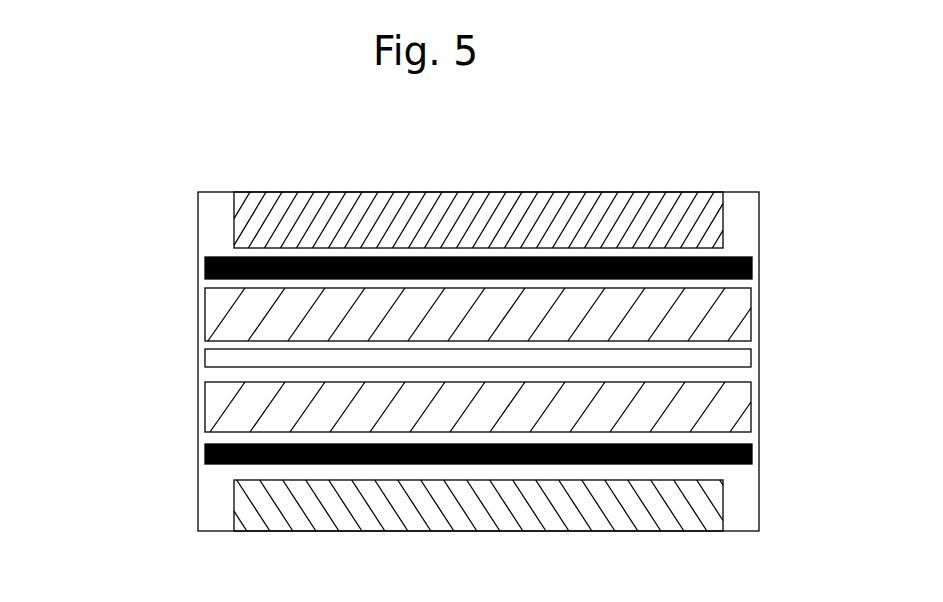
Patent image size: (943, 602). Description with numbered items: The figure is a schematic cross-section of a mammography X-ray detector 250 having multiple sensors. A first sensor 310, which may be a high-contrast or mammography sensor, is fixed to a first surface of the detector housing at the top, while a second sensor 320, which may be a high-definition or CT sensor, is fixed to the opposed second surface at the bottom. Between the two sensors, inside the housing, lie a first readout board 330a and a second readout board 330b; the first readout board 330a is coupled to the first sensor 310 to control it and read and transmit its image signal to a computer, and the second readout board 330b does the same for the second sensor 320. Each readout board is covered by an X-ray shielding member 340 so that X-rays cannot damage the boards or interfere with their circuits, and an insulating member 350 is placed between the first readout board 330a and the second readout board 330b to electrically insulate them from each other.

The mammography X-ray detector 250 is at (176, 244).
The first sensor 310 is at (728, 220).
The second sensor 320 is at (726, 503).
The first readout board 330a is at (751, 318).
The second readout board 330b is at (751, 408).
The X-ray shielding member 340 is at (752, 271).
The insulating member 350 is at (751, 362).